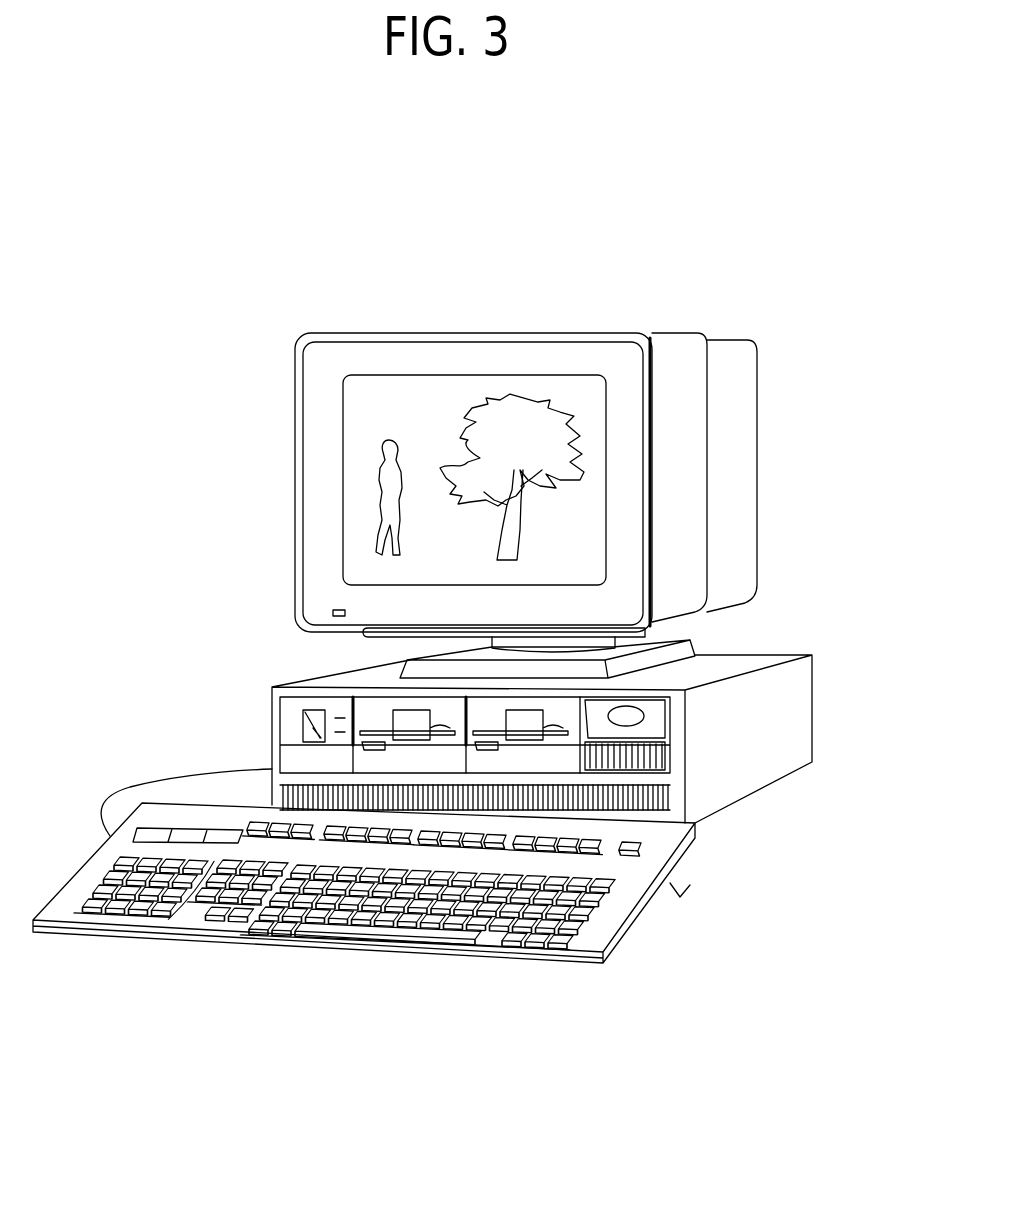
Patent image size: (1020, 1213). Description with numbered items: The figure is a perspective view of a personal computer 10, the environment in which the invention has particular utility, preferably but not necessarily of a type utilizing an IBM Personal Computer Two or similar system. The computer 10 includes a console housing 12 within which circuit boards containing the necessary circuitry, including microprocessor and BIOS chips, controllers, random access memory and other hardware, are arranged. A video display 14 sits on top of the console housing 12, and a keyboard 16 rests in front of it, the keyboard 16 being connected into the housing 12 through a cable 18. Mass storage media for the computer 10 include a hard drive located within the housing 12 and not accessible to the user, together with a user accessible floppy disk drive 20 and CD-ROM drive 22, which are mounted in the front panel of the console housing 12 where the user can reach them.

The personal computer 10 is at (188, 514).
The console housing 12 is at (728, 752).
The video display 14 is at (757, 400).
The keyboard 16 is at (520, 963).
The cable 18 is at (158, 775).
The floppy disk drive 20 is at (557, 712).
The CD-ROM drive 22 is at (417, 713).